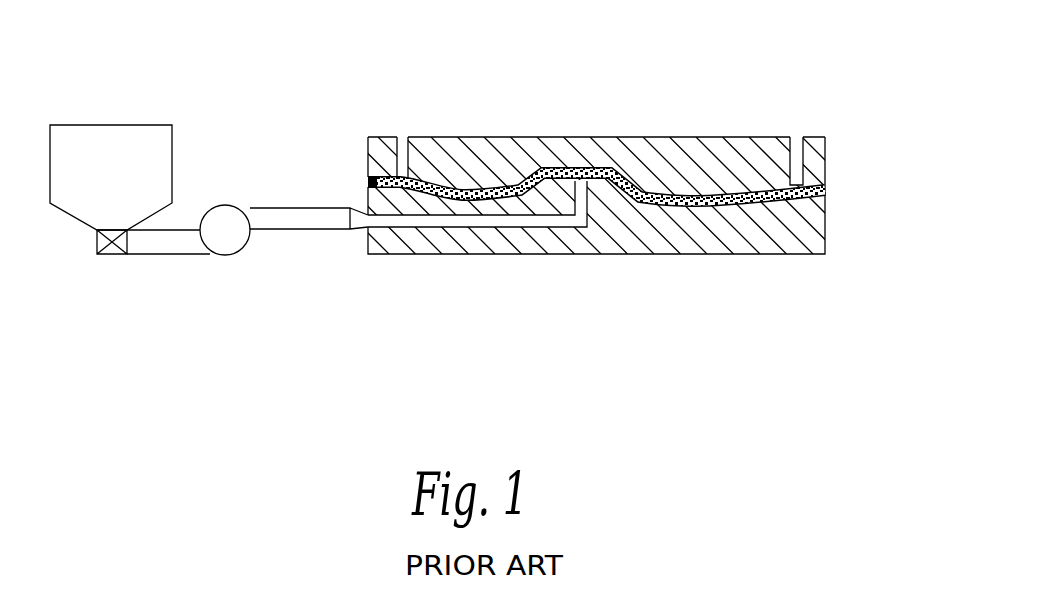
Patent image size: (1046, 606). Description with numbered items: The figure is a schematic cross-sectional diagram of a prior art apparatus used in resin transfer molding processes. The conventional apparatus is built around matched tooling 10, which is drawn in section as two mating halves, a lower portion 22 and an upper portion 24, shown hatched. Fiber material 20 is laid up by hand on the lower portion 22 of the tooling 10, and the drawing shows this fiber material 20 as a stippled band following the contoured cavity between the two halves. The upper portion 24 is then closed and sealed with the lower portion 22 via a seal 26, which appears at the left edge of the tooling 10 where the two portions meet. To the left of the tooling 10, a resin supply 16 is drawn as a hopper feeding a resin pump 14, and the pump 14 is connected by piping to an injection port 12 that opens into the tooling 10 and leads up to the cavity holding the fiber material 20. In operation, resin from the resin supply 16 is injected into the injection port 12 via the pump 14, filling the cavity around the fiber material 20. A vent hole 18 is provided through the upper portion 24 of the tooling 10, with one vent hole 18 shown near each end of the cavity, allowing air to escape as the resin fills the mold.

The matched tooling 10 is at (591, 202).
The injection port 12 is at (366, 231).
The resin pump 14 is at (225, 243).
The resin supply 16 is at (125, 125).
The vent hole 18 is at (818, 100).
The fiber material 20 is at (503, 202).
The lower portion 22 is at (813, 229).
The upper portion 24 is at (653, 155).
The seal 26 is at (367, 180).